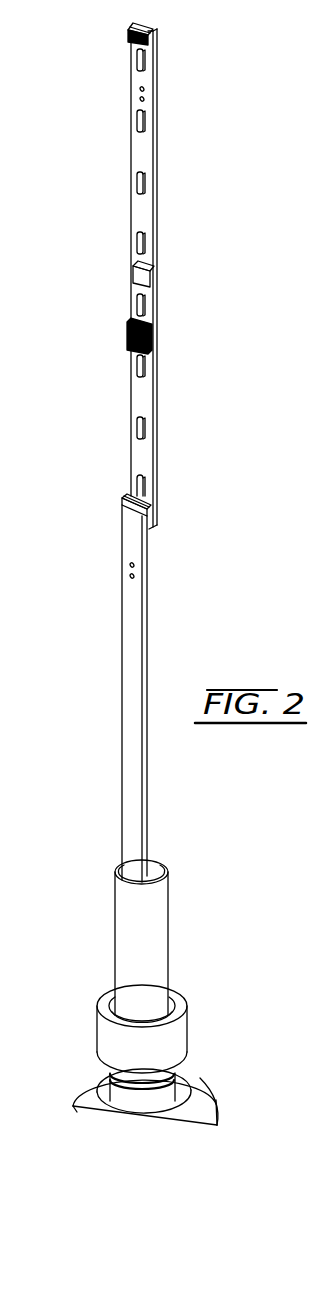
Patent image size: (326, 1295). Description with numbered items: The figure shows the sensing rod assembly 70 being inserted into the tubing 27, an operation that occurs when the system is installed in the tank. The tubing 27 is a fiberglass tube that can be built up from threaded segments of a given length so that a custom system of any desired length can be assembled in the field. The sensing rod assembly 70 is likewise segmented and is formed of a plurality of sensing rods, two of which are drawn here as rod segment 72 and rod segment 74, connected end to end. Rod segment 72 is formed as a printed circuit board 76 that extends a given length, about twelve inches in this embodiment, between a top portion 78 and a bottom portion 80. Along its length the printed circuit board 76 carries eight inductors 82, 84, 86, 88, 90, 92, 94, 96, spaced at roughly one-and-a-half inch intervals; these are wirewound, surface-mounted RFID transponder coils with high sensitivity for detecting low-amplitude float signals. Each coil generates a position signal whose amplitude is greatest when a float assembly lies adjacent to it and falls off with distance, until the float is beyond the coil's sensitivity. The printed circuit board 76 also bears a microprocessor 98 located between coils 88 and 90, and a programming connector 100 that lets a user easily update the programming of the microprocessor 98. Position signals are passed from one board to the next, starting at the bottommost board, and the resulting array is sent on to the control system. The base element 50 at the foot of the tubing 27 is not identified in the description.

The sensing rod assembly 70 is at (77, 94).
The rod segment 72 is at (165, 157).
The rod segment 74 is at (110, 616).
The printed circuit board 76 is at (150, 396).
The top portion 78 is at (168, 30).
The bottom portion 80 is at (166, 510).
The inductor 82 is at (137, 62).
The inductor 84 is at (137, 120).
The inductor 86 is at (137, 182).
The inductor 88 is at (137, 243).
The inductor 90 is at (137, 300).
The inductor 92 is at (137, 367).
The inductor 94 is at (137, 427).
The inductor 96 is at (137, 487).
The microprocessor 98 is at (150, 276).
The programming connector 100 is at (153, 333).
The tubing 27 is at (160, 925).
The base 50 is at (200, 1092).